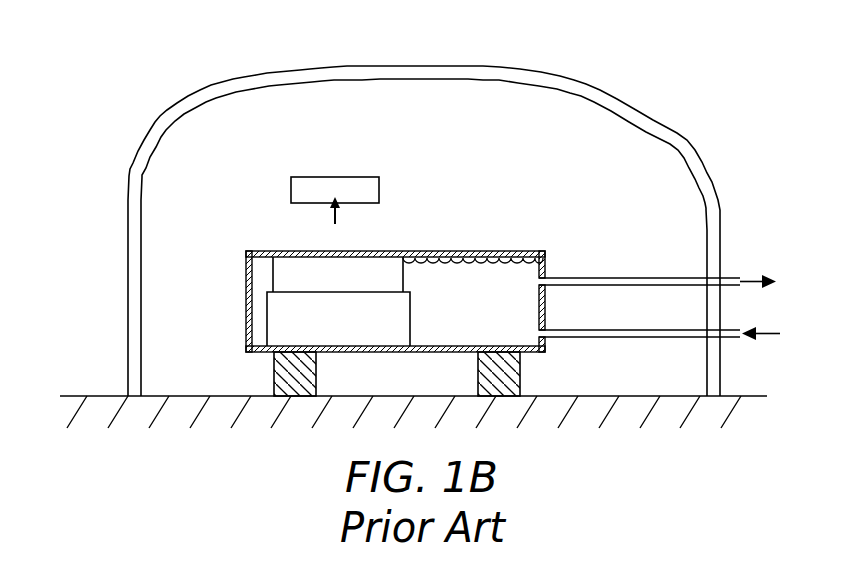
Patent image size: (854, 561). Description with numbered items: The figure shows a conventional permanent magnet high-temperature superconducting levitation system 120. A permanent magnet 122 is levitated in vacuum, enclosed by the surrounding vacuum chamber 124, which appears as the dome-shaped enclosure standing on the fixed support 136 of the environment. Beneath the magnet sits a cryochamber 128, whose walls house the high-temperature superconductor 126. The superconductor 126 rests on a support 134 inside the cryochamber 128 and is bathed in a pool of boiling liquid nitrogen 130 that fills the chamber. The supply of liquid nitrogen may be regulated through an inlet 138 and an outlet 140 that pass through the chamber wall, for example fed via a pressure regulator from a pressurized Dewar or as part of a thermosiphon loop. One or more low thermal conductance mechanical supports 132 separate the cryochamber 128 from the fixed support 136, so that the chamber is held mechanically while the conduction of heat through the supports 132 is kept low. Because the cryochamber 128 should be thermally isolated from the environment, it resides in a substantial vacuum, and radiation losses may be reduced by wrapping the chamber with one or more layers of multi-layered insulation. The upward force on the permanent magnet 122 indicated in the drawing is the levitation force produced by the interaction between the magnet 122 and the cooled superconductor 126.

The permanent magnet high-temperature superconducting levitation system 120 is at (692, 54).
The permanent magnet 122 is at (372, 176).
The vacuum chamber 124 is at (700, 135).
The high-temperature superconductor 126 is at (272, 283).
The cryochamber 128 is at (425, 252).
The pool of boiling liquid nitrogen 130 is at (517, 280).
The low thermal conductance mechanical supports 132 is at (273, 388).
The support 134 is at (265, 320).
The fixed support 136 is at (115, 394).
The inlet 138 is at (741, 340).
The outlet 140 is at (727, 277).